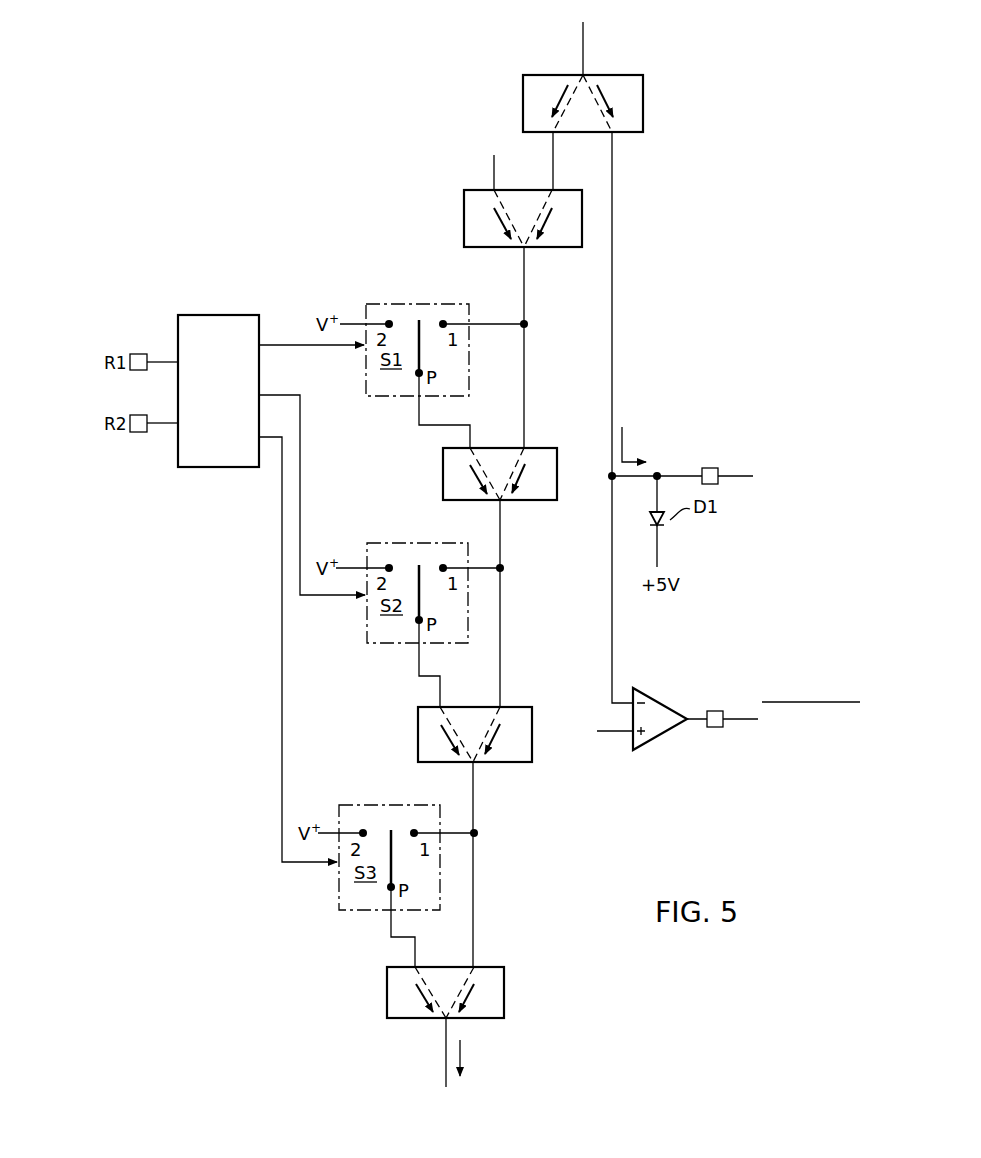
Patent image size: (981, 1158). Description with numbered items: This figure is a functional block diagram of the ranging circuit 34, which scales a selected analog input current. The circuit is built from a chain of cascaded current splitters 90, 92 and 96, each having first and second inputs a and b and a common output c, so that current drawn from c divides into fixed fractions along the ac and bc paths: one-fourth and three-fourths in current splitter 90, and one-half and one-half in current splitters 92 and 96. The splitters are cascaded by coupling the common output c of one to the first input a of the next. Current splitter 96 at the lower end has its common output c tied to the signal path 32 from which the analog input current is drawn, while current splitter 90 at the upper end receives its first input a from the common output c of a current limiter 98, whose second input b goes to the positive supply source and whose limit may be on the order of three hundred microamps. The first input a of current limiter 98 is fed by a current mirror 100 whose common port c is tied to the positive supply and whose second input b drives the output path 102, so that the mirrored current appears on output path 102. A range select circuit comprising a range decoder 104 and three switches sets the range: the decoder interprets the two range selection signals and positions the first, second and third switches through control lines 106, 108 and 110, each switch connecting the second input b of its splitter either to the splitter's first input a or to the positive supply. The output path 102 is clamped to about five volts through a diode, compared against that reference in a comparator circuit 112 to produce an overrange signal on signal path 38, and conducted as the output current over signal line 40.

The signal path 32 is at (444, 1054).
The ranging circuit 34 is at (582, 606).
The signal path 38 is at (741, 717).
The signal line 40 is at (732, 475).
The current splitter 90 is at (443, 462).
The current splitter 92 is at (418, 723).
The current splitter 96 is at (387, 982).
The current limiter 98 is at (464, 215).
The current mirror 100 is at (643, 95).
The output path 102 is at (612, 380).
The range decoder 104 is at (224, 316).
The control line 106 is at (292, 344).
The control line 108 is at (274, 395).
The control line 110 is at (270, 437).
The comparator circuit 112 is at (660, 700).